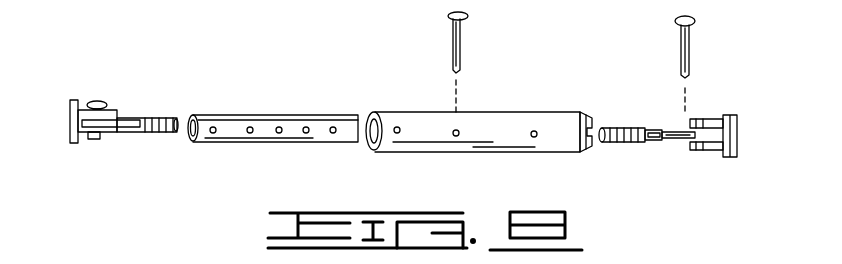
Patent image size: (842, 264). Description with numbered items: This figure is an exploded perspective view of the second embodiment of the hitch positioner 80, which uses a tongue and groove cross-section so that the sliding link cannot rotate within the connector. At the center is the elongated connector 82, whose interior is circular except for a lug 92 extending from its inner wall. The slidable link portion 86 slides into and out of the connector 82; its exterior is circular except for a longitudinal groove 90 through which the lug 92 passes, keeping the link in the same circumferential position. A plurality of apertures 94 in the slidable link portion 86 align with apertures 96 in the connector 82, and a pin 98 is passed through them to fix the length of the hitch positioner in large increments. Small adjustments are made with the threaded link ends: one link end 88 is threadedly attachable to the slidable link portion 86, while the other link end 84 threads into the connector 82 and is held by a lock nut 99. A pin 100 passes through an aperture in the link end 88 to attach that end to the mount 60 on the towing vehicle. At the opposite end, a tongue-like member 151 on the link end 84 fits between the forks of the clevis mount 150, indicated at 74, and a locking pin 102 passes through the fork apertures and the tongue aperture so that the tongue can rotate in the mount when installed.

The mount 60 is at (70, 122).
The clevis mount 74 is at (737, 132).
The hitch positioner 80 is at (196, 76).
The connector 82 is at (482, 115).
The link end 84 is at (633, 144).
The slidable link portion 86 is at (240, 135).
The link end 88 is at (152, 135).
The longitudinal groove 90 is at (228, 122).
The lug 92 is at (373, 117).
The apertures 94 is at (333, 135).
The apertures 96 is at (458, 135).
The pin 98 is at (460, 42).
The lock nut 99 is at (582, 112).
The pin 100 is at (95, 102).
The locking pin 102 is at (690, 40).
The clevis mount 150 is at (695, 168).
The tongue-like member 151 is at (671, 131).